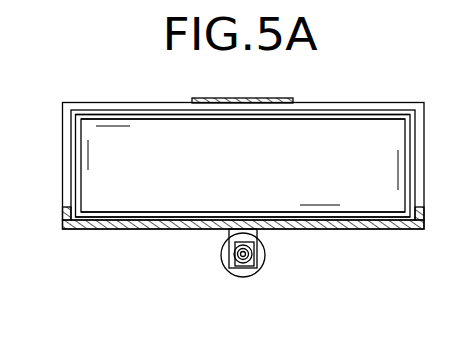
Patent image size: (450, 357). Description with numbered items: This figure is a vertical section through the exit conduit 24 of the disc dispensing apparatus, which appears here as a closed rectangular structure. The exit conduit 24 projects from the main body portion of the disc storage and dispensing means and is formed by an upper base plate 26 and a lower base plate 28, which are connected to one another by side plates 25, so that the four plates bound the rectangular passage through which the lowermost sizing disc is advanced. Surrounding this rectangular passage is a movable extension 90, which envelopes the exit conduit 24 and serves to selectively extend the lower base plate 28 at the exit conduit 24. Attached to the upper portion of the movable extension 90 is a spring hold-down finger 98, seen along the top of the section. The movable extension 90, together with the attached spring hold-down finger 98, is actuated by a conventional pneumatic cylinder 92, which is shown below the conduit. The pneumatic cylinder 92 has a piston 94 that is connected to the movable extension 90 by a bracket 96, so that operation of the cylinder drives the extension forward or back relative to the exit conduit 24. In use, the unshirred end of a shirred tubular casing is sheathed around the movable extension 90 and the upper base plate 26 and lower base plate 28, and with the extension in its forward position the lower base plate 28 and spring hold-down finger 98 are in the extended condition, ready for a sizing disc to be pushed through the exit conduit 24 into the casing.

The exit conduit 24 is at (261, 172).
The side plates 25 is at (80, 173).
The upper base plate 26 is at (128, 122).
The lower base plate 28 is at (338, 212).
The movable extension 90 is at (62, 219).
The pneumatic cylinder 92 is at (261, 263).
The piston 94 is at (252, 254).
The bracket 96 is at (227, 275).
The spring hold-down finger 98 is at (243, 98).